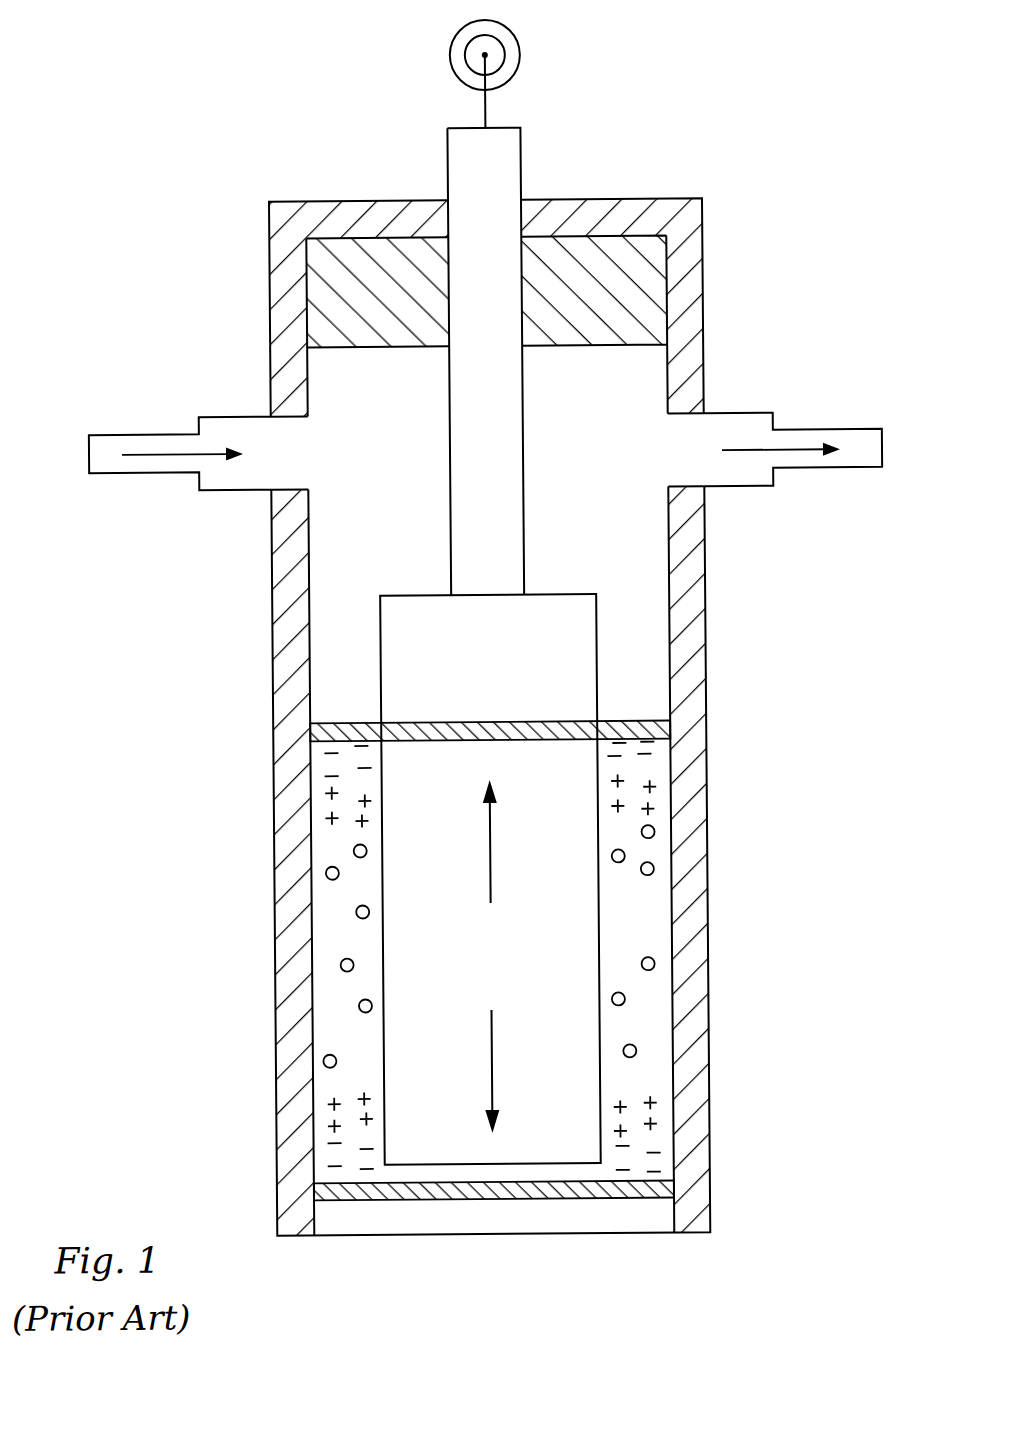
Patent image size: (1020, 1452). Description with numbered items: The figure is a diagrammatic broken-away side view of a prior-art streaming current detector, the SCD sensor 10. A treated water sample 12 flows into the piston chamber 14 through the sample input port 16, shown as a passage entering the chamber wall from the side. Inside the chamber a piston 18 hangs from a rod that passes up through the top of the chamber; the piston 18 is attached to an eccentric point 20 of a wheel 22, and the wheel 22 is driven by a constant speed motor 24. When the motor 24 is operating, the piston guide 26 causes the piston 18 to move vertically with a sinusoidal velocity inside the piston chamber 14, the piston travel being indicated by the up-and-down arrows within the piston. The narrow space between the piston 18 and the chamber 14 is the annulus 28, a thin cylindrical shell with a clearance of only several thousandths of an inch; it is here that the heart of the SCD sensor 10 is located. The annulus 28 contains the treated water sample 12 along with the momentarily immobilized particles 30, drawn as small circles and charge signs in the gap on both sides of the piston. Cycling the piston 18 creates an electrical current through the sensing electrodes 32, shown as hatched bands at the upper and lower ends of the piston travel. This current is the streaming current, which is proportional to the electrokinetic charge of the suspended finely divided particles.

The SCD sensor 10 is at (464, 637).
The treated water sample 12 is at (638, 926).
The piston chamber 14 is at (267, 606).
The sample input port 16 is at (77, 441).
The piston 18 is at (601, 641).
The eccentric point 20 is at (499, 64).
The wheel 22 is at (478, 73).
The constant speed motor 24 is at (527, 63).
The piston guide 26 is at (532, 193).
The annulus 28 is at (236, 958).
The momentarily immobilized particles 30 is at (336, 964).
The sensing electrodes 32 is at (611, 722).